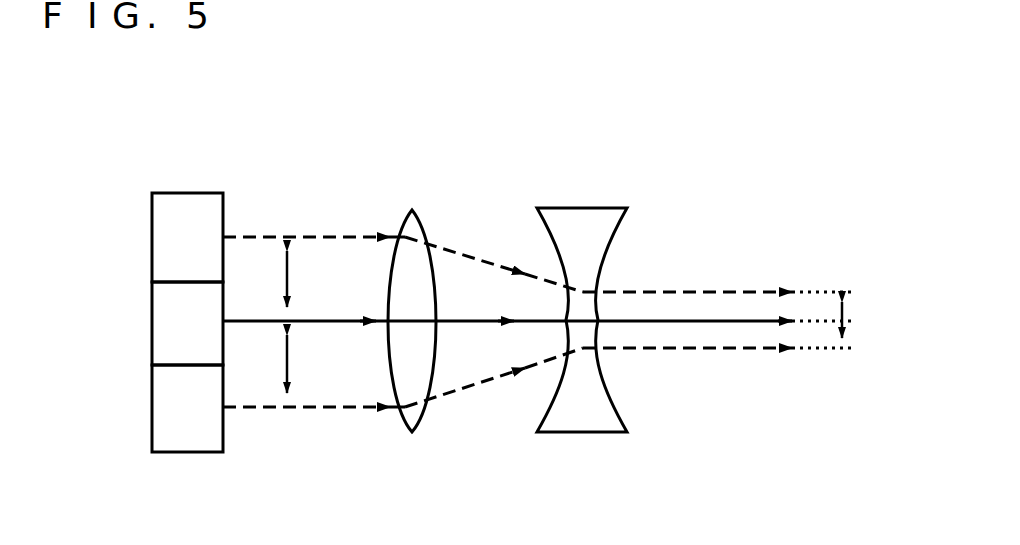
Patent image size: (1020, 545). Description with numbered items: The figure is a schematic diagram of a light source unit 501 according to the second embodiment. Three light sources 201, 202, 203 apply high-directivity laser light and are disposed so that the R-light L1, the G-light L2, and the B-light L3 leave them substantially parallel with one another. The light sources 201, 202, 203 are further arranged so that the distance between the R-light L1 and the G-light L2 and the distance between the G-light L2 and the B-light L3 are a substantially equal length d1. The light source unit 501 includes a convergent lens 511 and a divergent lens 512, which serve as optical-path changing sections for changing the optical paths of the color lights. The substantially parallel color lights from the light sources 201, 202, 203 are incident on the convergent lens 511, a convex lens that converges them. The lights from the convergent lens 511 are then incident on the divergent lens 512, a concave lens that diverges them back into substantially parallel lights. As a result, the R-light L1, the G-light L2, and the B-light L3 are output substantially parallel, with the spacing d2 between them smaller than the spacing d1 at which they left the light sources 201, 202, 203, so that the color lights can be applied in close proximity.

The light source 201 is at (152, 237).
The light source 202 is at (152, 321).
The light source 203 is at (152, 407).
The light source unit 501 is at (567, 267).
The convergent lens 511 is at (420, 230).
The divergent lens 512 is at (601, 208).
The R-light L1 is at (253, 237).
The G-light L2 is at (336, 321).
The B-light L3 is at (255, 410).
The distance d1 is at (301, 322).
The distance d2 is at (845, 312).